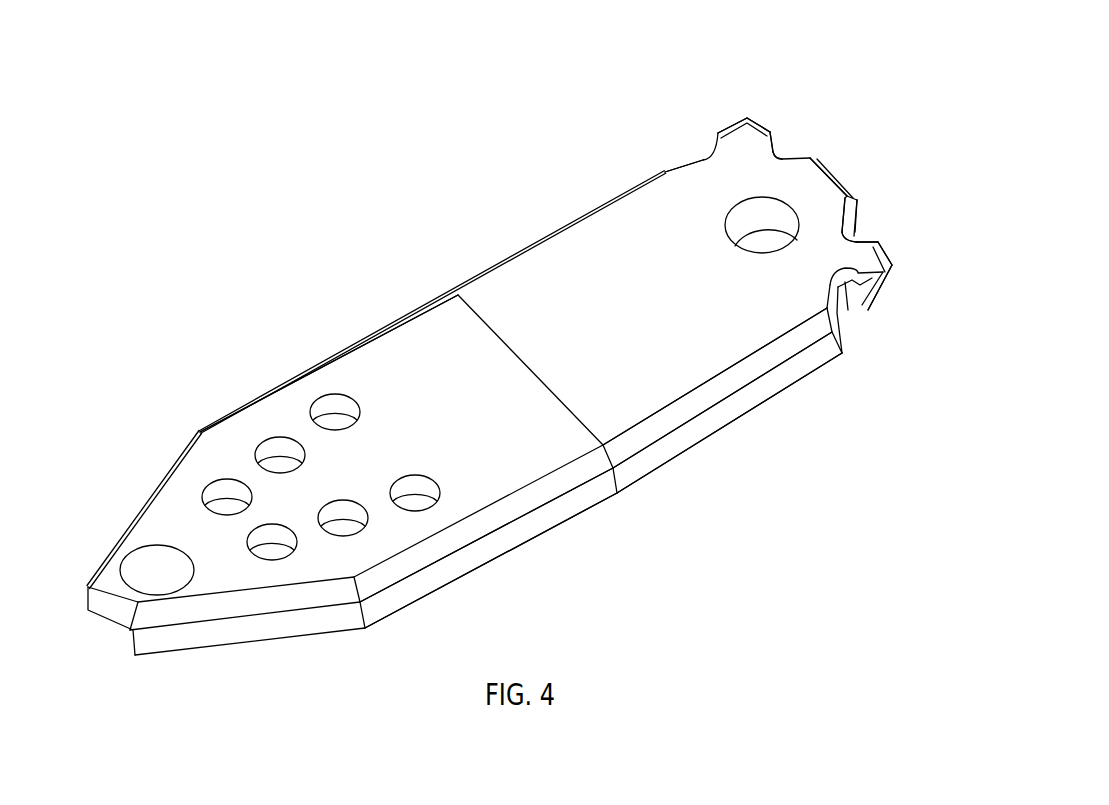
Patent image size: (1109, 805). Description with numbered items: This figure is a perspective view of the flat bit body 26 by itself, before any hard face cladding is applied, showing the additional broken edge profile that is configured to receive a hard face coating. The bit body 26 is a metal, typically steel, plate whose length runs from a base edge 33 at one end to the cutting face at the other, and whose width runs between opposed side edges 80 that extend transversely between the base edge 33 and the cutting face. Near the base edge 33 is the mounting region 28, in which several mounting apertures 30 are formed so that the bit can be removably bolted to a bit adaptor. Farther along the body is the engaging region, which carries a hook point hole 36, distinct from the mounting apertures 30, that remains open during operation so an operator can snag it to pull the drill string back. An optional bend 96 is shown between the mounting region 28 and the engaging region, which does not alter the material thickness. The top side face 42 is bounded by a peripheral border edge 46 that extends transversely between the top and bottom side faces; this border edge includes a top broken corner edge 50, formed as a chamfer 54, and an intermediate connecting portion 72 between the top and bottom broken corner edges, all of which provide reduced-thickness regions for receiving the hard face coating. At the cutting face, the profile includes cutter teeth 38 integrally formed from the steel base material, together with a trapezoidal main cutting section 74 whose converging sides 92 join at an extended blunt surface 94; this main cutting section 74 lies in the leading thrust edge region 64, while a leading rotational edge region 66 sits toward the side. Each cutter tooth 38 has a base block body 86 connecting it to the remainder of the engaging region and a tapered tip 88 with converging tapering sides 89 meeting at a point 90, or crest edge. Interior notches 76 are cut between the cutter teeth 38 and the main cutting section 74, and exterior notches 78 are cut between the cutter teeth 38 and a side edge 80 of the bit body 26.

The bit body 26 is at (514, 194).
The mounting region 28 is at (370, 380).
The mounting apertures 30 is at (278, 448).
The base edge 33 is at (113, 625).
The hook point hole 36 is at (770, 233).
The cutter teeth 38 is at (718, 133).
The top side face 42 is at (609, 327).
The peripheral border edge 46 is at (555, 513).
The top broken corner edge 50 is at (743, 372).
The chamfer 54 is at (683, 417).
The leading thrust edge region 64 is at (892, 170).
The leading rotational edge region 66 is at (887, 330).
The intermediate connecting portion 72 is at (503, 527).
The main cutting section 74 is at (857, 197).
The interior notches 76 is at (782, 150).
The exterior notches 78 is at (703, 148).
The side edges 80 is at (400, 323).
The base block body 86 is at (742, 147).
The tapered tip 88 is at (748, 115).
The converging tapering sides 89 is at (745, 118).
The point 90 is at (744, 130).
The converging sides 92 is at (800, 158).
The extended blunt surface 94 is at (822, 196).
The bend 96 is at (477, 312).